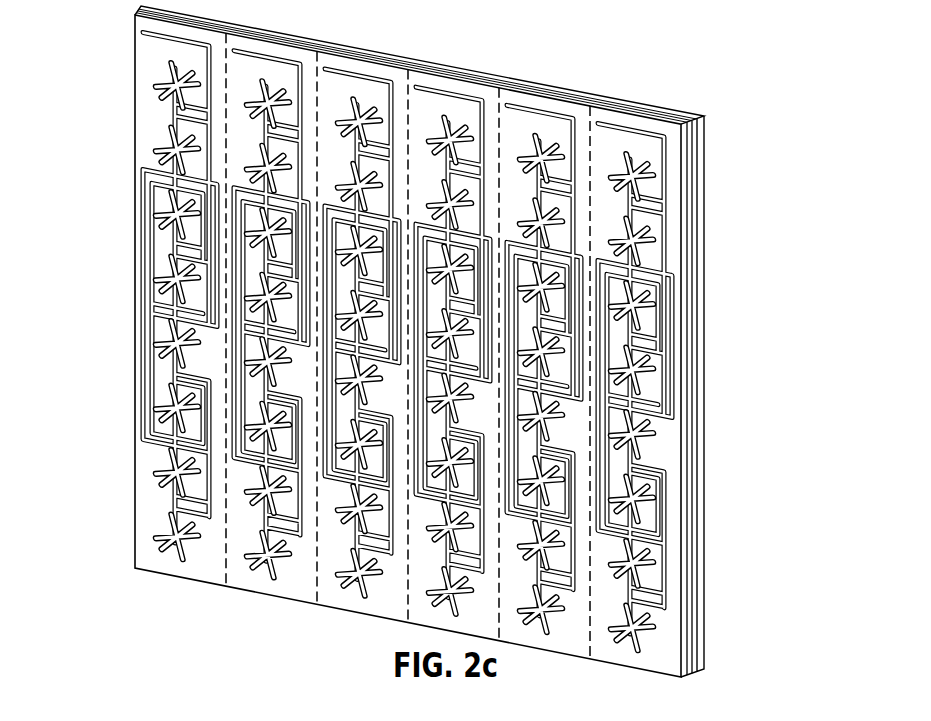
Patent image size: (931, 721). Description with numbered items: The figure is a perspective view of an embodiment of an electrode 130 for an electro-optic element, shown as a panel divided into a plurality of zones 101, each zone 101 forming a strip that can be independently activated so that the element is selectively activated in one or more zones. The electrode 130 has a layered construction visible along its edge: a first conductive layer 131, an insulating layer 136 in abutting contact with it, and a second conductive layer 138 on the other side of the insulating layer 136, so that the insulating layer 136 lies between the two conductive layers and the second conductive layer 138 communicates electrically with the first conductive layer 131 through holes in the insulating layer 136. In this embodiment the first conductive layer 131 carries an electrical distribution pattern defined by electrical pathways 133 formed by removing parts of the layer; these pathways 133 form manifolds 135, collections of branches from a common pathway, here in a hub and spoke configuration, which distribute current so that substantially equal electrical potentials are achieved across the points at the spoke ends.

The electrode 130 is at (462, 338).
The zone 101 is at (705, 118).
The first conductive layer 131 is at (687, 380).
The insulating layer 136 is at (693, 303).
The second conductive layer 138 is at (702, 228).
The electrical pathway 133 is at (338, 292).
The manifold 135 is at (346, 112).